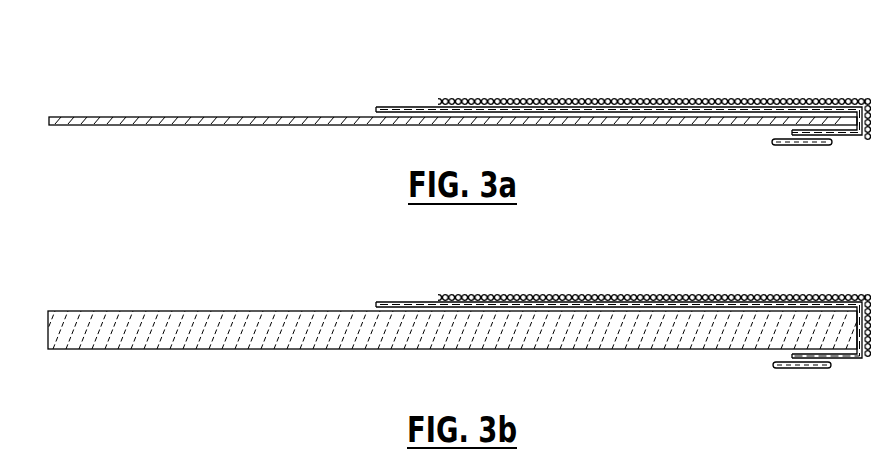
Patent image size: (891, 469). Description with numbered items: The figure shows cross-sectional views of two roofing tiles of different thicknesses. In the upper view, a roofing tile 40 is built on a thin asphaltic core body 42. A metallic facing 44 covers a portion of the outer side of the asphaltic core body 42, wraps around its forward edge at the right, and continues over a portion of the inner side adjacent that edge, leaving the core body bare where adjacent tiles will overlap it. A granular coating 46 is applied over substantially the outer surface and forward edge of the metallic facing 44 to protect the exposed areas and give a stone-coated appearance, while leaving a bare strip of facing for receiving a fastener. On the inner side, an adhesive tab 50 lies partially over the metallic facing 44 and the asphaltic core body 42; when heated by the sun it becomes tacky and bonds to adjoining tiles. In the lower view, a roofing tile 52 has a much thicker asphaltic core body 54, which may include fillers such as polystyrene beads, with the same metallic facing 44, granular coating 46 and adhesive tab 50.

In FIG. 3a, the roofing tile 40 is at (281, 68).
In FIG. 3a, the asphaltic core body 42 is at (78, 118).
In FIG. 3a, the metallic facing 44 is at (400, 107).
In FIG. 3b, the metallic facing 44 is at (406, 302).
In FIG. 3a, the granular coating 46 is at (603, 98).
In FIG. 3b, the granular coating 46 is at (585, 294).
In FIG. 3a, the adhesive tab 50 is at (780, 143).
In FIG. 3b, the adhesive tab 50 is at (780, 367).
In FIG. 3b, the roofing tile 52 is at (259, 285).
In FIG. 3b, the asphaltic core body 54 is at (58, 311).